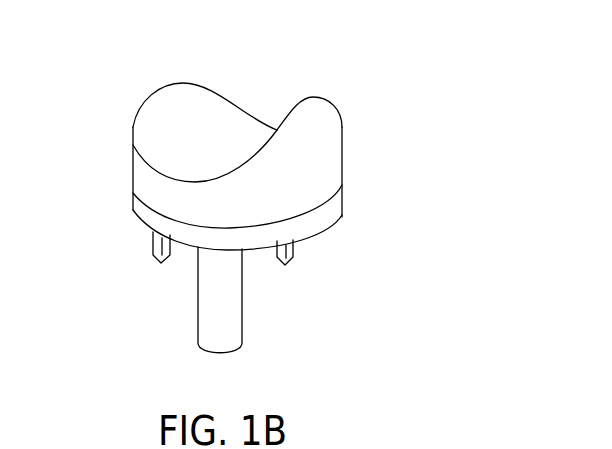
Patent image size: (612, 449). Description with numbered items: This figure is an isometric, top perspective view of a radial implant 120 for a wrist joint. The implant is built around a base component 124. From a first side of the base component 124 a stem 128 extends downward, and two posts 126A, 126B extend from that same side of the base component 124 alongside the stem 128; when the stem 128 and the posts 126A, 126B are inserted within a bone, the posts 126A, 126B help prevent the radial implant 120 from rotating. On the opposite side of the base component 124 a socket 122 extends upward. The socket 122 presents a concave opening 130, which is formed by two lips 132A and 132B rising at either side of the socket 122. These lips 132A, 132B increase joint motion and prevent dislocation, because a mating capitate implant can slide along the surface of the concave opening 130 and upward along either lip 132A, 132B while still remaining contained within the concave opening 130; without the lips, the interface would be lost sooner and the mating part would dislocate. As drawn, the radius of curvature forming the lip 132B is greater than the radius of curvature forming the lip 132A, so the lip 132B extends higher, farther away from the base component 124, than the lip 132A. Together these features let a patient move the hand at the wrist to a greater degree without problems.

The radial implant 120 is at (426, 79).
The socket 122 is at (234, 117).
The base component 124 is at (328, 216).
The post 126A is at (294, 258).
The post 126B is at (154, 247).
The stem 128 is at (225, 337).
The concave opening 130 is at (182, 148).
The lip 132A is at (167, 83).
The lip 132B is at (320, 112).